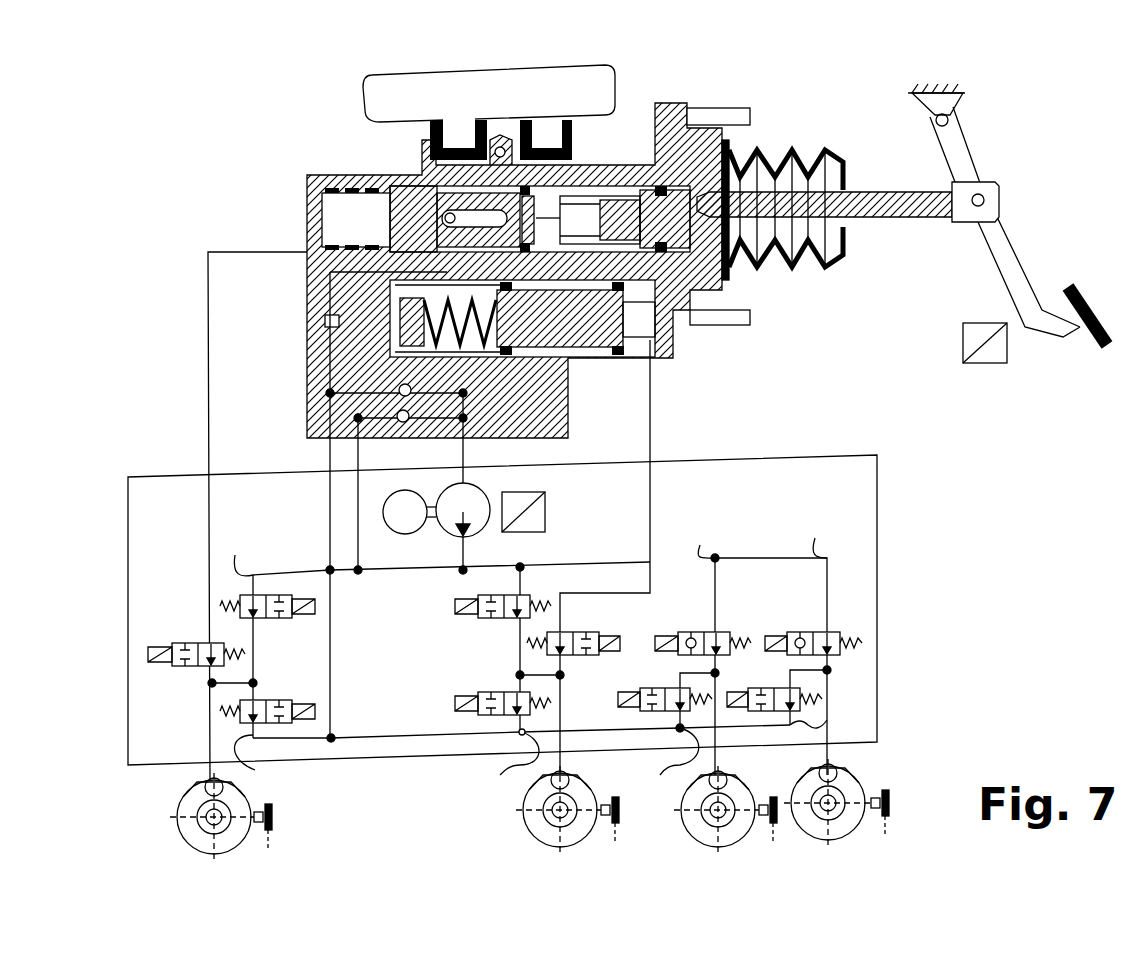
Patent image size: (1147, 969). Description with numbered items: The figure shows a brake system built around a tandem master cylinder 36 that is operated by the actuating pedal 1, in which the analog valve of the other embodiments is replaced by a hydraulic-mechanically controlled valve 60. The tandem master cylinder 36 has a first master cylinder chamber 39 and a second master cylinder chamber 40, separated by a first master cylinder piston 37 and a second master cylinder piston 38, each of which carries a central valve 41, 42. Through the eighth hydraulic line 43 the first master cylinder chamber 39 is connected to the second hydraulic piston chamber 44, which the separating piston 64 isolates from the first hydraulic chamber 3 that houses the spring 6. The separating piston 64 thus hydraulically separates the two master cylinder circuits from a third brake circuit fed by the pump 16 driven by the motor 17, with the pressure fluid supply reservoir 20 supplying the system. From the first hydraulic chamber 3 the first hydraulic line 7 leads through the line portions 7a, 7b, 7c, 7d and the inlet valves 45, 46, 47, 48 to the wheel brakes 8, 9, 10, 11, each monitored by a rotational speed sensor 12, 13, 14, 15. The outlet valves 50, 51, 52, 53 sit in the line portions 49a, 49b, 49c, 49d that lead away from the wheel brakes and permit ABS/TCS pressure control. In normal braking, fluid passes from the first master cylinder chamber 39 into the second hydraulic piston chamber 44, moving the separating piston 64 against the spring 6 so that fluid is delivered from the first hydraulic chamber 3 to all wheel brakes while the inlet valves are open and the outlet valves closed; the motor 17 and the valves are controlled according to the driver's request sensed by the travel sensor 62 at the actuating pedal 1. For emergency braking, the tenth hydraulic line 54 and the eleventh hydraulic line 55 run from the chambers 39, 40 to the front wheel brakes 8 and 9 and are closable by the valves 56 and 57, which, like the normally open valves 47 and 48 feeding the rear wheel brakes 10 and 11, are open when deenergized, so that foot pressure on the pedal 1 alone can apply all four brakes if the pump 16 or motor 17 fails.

The actuating pedal 1 is at (1020, 252).
The first hydraulic chamber 3 is at (455, 345).
The spring 6 is at (477, 338).
The first hydraulic line 7 is at (462, 454).
The line portion 7a is at (277, 633).
The line portion 7b is at (530, 570).
The line portion 7c is at (753, 646).
The line portion 7d is at (808, 644).
The wheel brake 8 is at (182, 845).
The wheel brake 9 is at (533, 840).
The wheel brake 10 is at (693, 838).
The wheel brake 11 is at (858, 830).
The rotational speed sensor 12 is at (275, 818).
The rotational speed sensor 13 is at (622, 811).
The rotational speed sensor 14 is at (773, 797).
The rotational speed sensor 15 is at (890, 790).
The pump 16 is at (492, 525).
The motor 17 is at (400, 534).
The pressure fluid supply reservoir 20 is at (369, 80).
The tandem master cylinder 36 is at (307, 176).
The first master cylinder piston 37 is at (708, 128).
The second master cylinder piston 38 is at (423, 183).
The first master cylinder chamber 39 is at (590, 205).
The second master cylinder chamber 40 is at (338, 205).
The central valve 41 is at (620, 215).
The central valve 42 is at (340, 238).
The eighth hydraulic line 43 is at (712, 272).
The second hydraulic piston chamber 44 is at (690, 340).
The inlet valve 45 is at (280, 618).
The inlet valve 46 is at (492, 618).
The inlet valve 47 is at (692, 632).
The inlet valve 48 is at (800, 632).
The line portion 49a is at (377, 766).
The line portion 49b is at (565, 759).
The line portion 49c is at (704, 756).
The line portion 49d is at (837, 719).
The outlet valve 50 is at (275, 700).
The outlet valve 51 is at (492, 692).
The outlet valve 52 is at (660, 688).
The outlet valve 53 is at (775, 672).
The tenth hydraulic line 54 is at (204, 352).
The eleventh hydraulic line 55 is at (655, 420).
The valve 56 is at (185, 666).
The valve 57 is at (575, 632).
The hydraulic-mechanically controlled valve 60 is at (330, 322).
The travel sensor 62 is at (990, 365).
The separating piston 64 is at (608, 337).